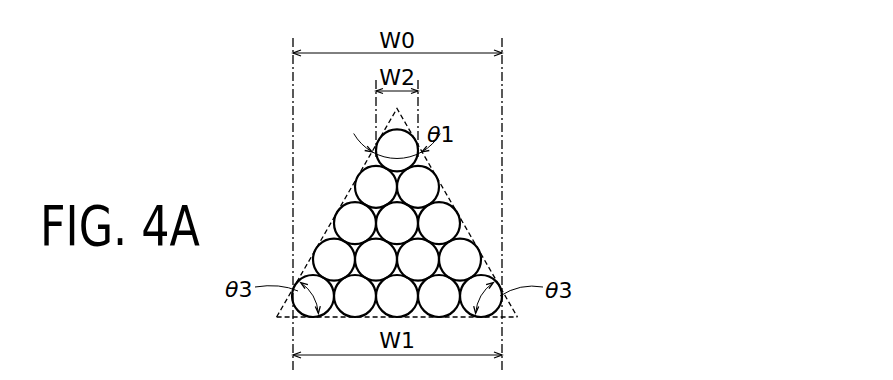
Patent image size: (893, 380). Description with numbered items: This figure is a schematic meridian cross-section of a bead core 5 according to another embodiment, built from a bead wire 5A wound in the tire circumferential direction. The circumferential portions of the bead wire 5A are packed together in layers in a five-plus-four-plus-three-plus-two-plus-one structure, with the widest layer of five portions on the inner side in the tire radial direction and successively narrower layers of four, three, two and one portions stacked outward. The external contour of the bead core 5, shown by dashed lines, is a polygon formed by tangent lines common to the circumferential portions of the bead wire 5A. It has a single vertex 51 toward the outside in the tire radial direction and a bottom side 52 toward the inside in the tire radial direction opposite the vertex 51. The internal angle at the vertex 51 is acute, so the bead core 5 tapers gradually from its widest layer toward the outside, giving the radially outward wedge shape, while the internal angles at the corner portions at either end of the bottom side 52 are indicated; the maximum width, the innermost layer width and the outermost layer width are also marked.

The bead core 5 is at (447, 186).
The bead wire 5A is at (462, 262).
The vertex 51 is at (399, 110).
The bottom side 52 is at (470, 321).